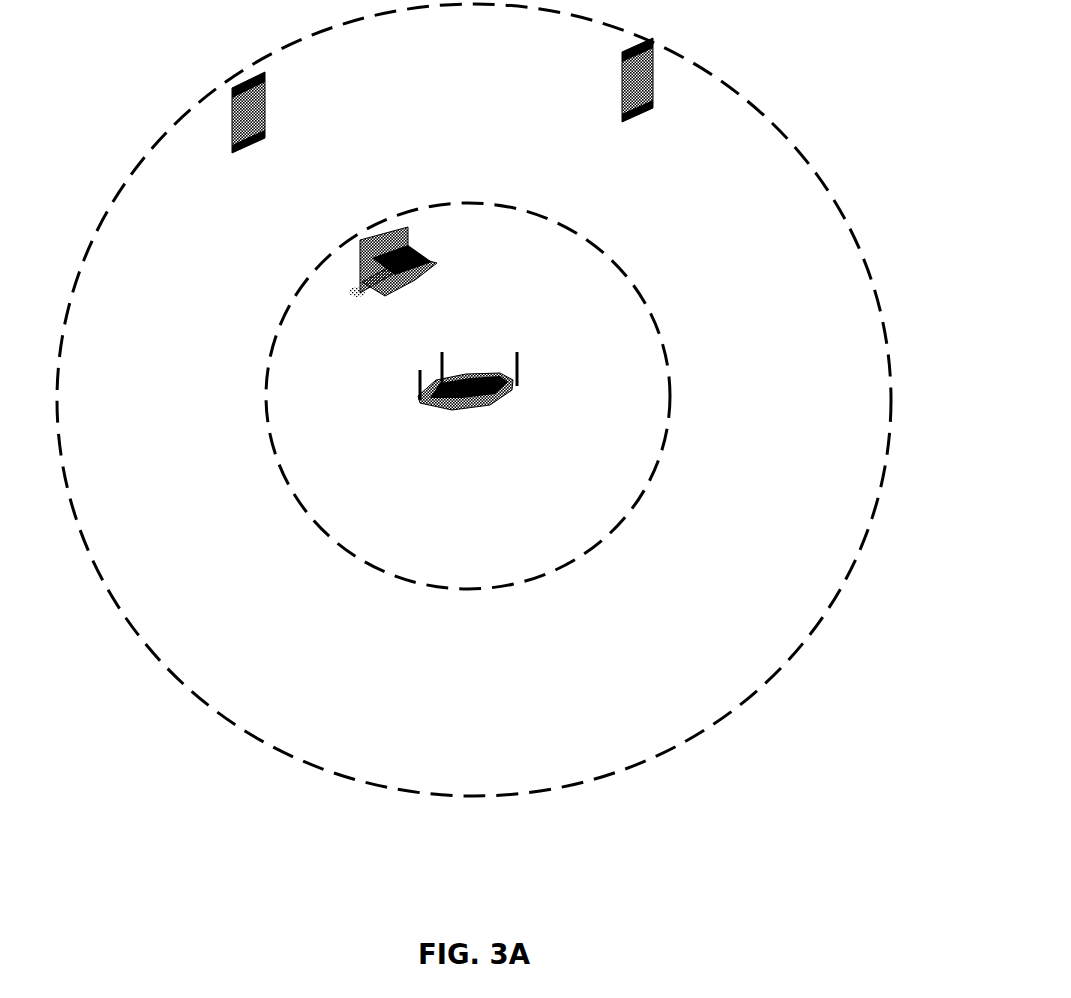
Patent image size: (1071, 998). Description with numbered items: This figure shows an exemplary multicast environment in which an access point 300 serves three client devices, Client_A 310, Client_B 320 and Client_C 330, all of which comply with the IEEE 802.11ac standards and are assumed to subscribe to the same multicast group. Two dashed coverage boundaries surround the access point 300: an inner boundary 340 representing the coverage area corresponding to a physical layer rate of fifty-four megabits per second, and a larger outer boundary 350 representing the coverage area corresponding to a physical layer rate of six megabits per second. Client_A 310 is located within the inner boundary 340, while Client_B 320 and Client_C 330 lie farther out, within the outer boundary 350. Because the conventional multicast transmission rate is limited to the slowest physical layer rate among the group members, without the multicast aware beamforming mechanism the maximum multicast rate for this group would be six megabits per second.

The access point 300 is at (484, 456).
The Client_A 310 is at (449, 324).
The Client_B 320 is at (682, 160).
The Client_C 330 is at (294, 194).
The 54 Mbps coverage range 340 is at (569, 200).
The 6 Mbps coverage range 350 is at (770, 88).